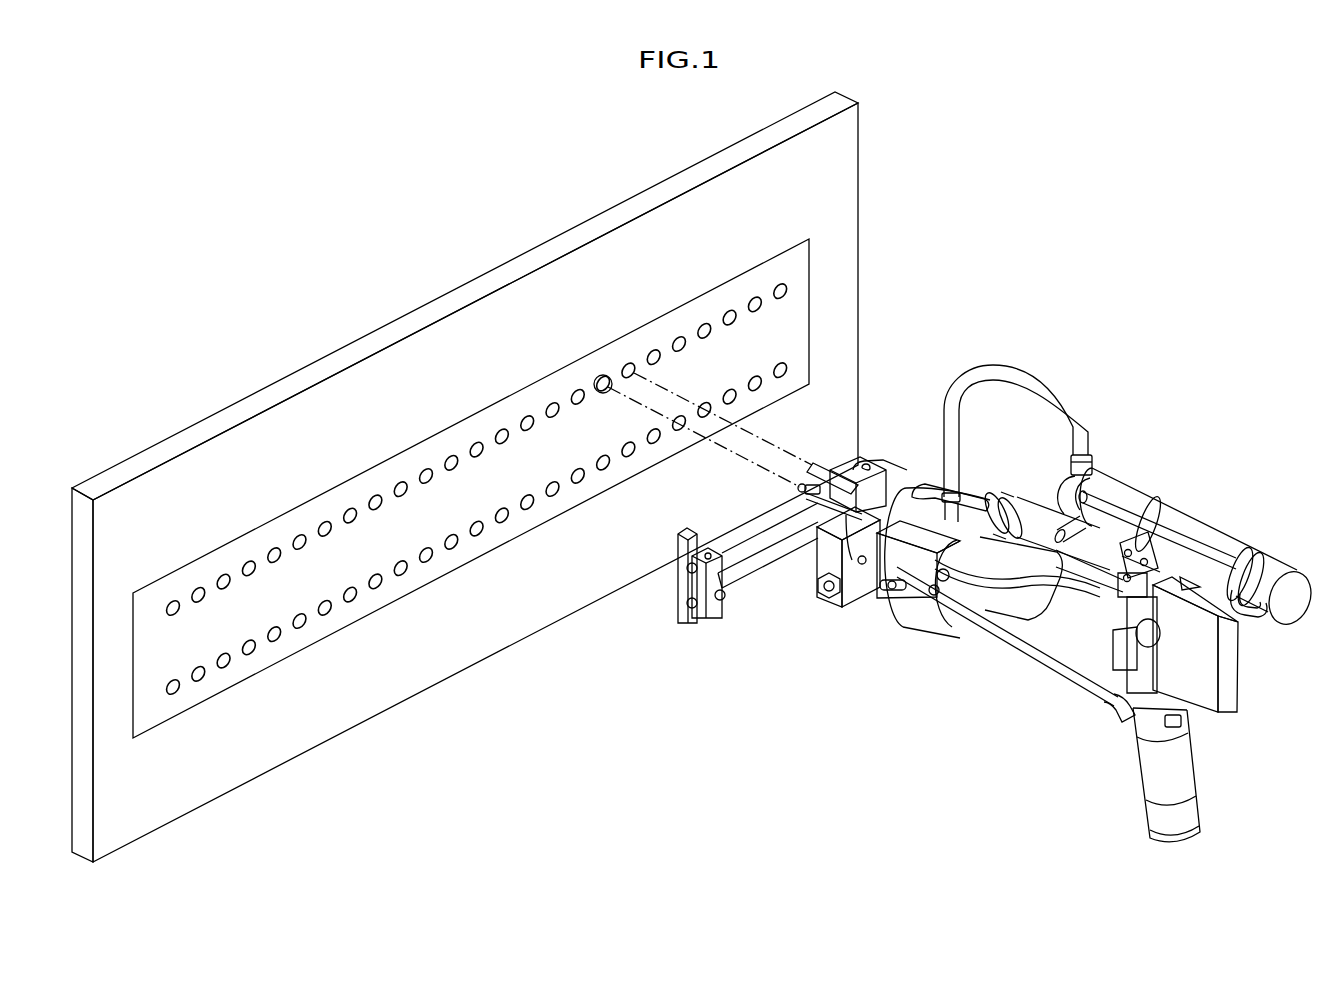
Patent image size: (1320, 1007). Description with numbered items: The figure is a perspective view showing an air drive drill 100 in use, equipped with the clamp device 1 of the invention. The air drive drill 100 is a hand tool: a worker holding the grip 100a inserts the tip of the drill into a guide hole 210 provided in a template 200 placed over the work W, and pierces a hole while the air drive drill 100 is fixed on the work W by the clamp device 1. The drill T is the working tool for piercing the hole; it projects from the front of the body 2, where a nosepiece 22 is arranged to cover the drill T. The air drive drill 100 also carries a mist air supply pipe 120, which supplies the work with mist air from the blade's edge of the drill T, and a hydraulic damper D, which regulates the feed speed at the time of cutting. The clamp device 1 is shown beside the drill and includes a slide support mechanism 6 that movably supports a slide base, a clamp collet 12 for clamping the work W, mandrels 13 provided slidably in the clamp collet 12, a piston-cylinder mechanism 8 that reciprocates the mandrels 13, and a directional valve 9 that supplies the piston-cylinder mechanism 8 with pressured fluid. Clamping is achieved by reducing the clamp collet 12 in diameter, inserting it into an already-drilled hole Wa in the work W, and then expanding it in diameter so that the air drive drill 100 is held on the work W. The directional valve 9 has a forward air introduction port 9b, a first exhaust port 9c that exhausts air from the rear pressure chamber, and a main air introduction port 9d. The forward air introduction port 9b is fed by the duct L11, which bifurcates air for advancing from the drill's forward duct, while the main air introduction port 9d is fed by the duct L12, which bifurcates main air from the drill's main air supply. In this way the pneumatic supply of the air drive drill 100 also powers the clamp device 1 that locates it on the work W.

The work W is at (650, 195).
The drilled hole Wa is at (599, 376).
The template 200 is at (740, 276).
The guide hole 210 is at (675, 338).
The clamp device 1 is at (780, 632).
The slide support mechanism 6 is at (700, 633).
The piston-cylinder mechanism 8 is at (806, 568).
The directional valve 9 is at (889, 608).
The forward air introduction port 9b is at (946, 582).
The first exhaust port 9c is at (937, 596).
The main air introduction port 9d is at (892, 592).
The clamp collet 12 is at (792, 499).
The mandrels 13 is at (796, 488).
The drill T is at (824, 458).
The nosepiece 22 is at (935, 480).
The hydraulic damper D is at (1020, 505).
The mist air supply pipe 120 is at (1040, 378).
The body 2 is at (1097, 640).
The duct L11 is at (1052, 622).
The duct L12 is at (1010, 622).
The air drive drill 100 is at (920, 733).
The grip 100a is at (1140, 762).